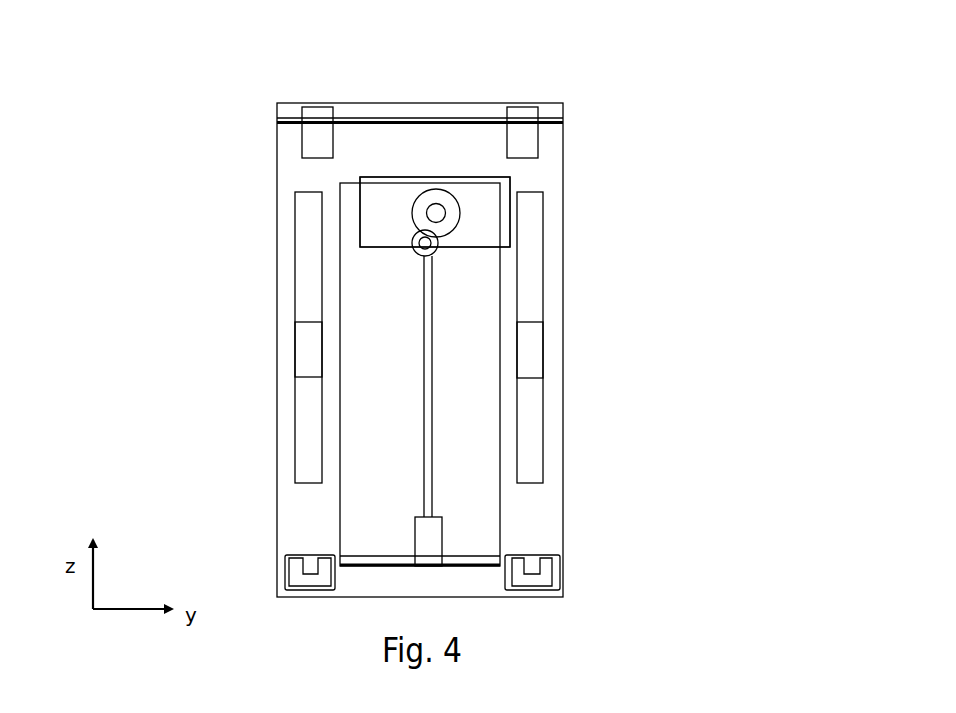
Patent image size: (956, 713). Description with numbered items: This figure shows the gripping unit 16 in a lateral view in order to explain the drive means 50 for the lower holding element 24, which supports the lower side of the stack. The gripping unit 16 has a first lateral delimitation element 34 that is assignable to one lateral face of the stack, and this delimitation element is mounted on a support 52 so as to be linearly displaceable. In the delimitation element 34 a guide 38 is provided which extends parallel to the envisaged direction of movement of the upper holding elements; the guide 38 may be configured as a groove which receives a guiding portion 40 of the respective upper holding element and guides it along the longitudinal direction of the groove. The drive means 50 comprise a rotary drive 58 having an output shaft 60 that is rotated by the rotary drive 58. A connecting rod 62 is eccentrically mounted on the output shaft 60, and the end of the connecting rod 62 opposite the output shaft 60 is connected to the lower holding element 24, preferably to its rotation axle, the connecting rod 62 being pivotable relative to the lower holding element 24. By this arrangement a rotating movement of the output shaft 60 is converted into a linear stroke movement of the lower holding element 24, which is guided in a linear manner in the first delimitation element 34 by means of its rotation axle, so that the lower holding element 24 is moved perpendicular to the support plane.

The gripping unit 16 is at (498, 76).
The lower holding element 24 is at (556, 560).
The first lateral delimitation element 34 is at (528, 507).
The guide 38 is at (312, 283).
The guiding portion 40 is at (307, 342).
The drive means 50 is at (373, 216).
The support 52 is at (558, 107).
The rotary drive 58 is at (480, 192).
The output shaft 60 is at (440, 213).
The connecting rod 62 is at (430, 403).